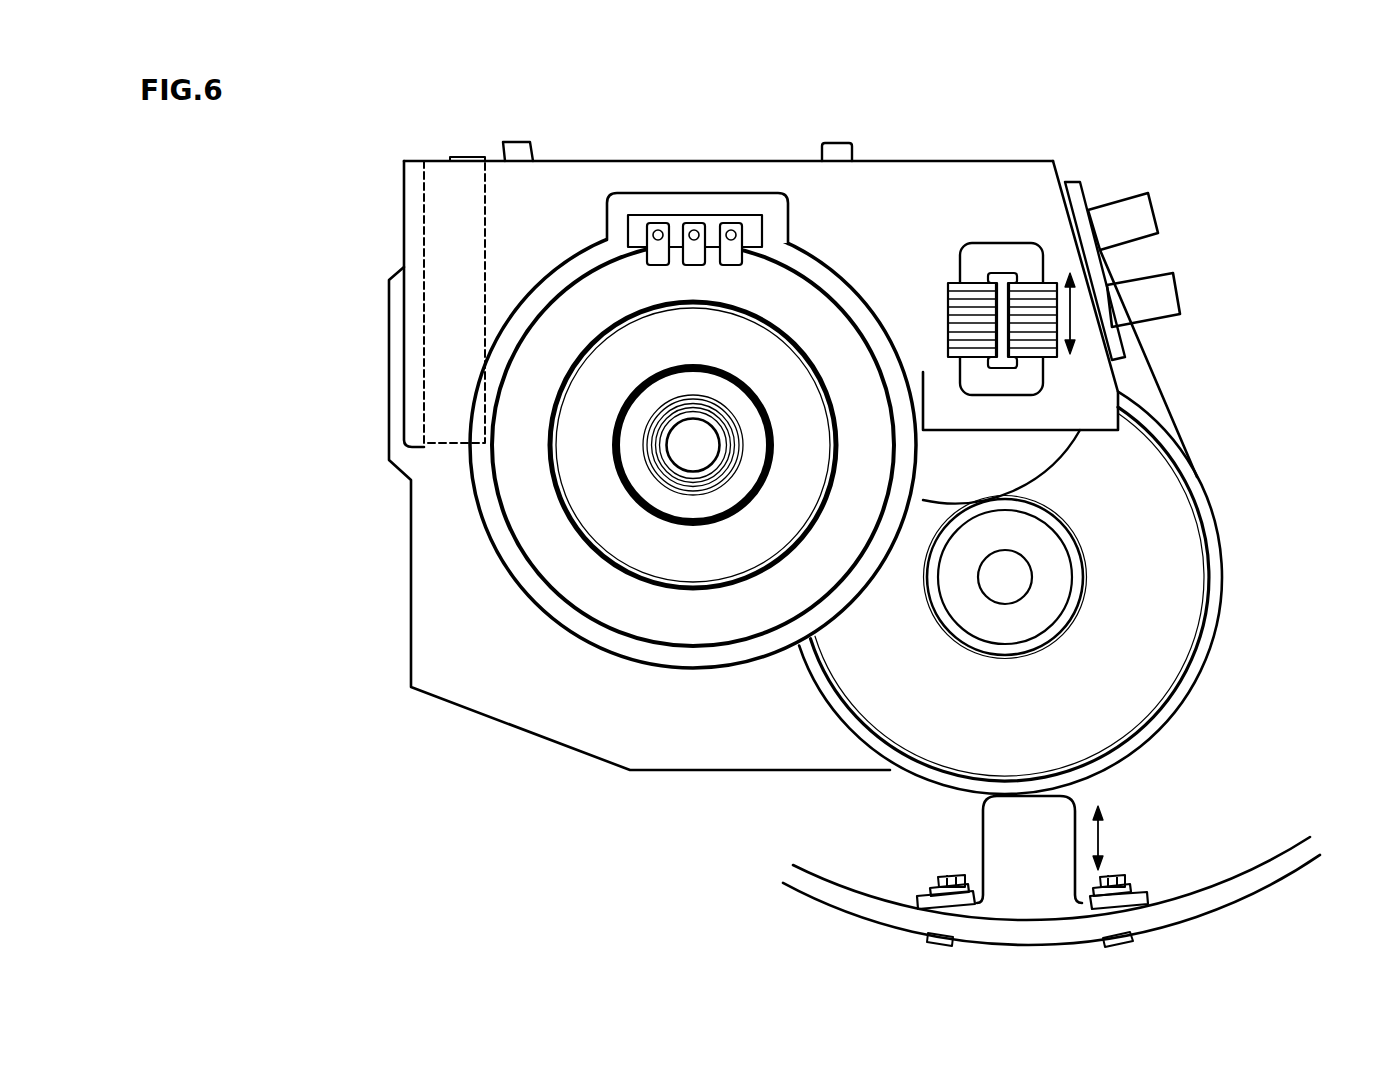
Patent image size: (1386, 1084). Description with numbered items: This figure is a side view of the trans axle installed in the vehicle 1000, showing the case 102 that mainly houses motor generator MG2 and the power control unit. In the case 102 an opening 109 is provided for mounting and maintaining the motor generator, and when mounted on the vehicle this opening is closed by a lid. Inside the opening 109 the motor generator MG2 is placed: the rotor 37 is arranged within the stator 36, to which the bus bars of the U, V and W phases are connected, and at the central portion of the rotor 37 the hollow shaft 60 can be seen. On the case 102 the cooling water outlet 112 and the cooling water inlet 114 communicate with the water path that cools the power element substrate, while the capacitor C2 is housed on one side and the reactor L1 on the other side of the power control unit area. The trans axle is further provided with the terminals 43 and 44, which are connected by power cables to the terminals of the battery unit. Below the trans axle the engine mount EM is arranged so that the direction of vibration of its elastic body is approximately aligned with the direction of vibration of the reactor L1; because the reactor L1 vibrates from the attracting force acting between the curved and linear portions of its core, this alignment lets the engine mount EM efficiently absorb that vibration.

The capacitor C2 is at (487, 181).
The cooling water outlet 112 is at (518, 141).
The cooling water inlet 114 is at (834, 142).
The reactor L1 is at (1000, 247).
The terminal 43 is at (1159, 212).
The terminal 44 is at (1180, 290).
The case 102 is at (1120, 399).
The hollow shaft 60 is at (663, 449).
The rotor 37 is at (618, 468).
The stator 36 is at (562, 505).
The motor generator MG2 is at (628, 430).
The opening 109 is at (570, 610).
The engine mount EM is at (995, 863).
The vehicle 1000 is at (1295, 866).